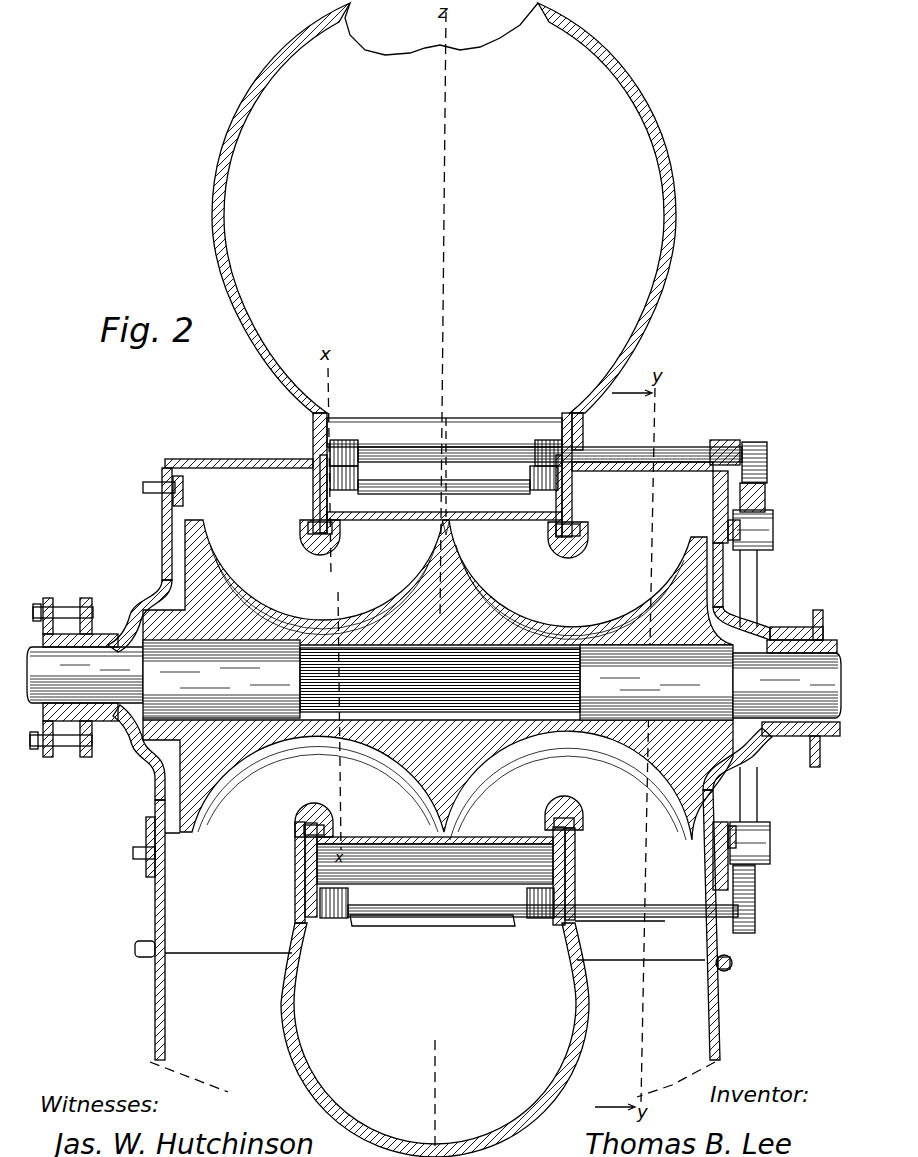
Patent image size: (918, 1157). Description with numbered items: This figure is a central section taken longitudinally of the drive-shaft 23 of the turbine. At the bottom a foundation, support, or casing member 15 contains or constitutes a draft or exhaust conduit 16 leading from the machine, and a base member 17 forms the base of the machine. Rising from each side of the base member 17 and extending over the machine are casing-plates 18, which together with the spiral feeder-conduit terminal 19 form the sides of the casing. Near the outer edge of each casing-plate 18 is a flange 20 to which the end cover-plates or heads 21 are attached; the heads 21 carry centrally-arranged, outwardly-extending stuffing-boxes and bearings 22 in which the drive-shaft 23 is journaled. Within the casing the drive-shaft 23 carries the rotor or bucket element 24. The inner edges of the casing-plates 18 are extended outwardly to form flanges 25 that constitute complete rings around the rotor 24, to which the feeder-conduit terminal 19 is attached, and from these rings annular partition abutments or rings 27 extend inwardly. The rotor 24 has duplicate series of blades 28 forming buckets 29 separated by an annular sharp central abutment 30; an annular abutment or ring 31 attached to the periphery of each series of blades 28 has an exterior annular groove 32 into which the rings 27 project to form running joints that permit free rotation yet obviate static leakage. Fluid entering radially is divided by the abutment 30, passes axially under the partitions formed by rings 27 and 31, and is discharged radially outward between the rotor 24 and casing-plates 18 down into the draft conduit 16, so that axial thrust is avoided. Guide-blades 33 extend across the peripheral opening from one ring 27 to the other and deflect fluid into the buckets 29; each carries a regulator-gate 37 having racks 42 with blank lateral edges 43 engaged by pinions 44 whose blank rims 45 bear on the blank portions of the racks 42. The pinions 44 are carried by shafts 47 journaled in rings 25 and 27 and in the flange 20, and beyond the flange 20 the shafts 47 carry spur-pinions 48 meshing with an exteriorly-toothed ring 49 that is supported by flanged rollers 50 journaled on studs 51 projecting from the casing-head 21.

The foundation, support, or casing member 15 is at (154, 990).
The draft or exhaust conduit 16 is at (429, 996).
The base member 17 is at (165, 918).
The casing-plates 18 is at (262, 459).
The feeder-conduit terminal 19 is at (444, 580).
The flange 20 is at (150, 482).
The end cover-plates or heads 21 is at (162, 556).
The stuffing-boxes and bearings 22 is at (118, 633).
The drive-shaft 23 is at (434, 680).
The rotor or bucket element 24 is at (440, 702).
The flanges 25 is at (313, 437).
The annular partition abutments or rings 27 is at (313, 499).
The blades 28 is at (398, 514).
The buckets 29 is at (438, 680).
The annular sharp central abutment 30 is at (440, 525).
The annular abutment or ring 31 is at (318, 554).
The exterior annular groove 32 is at (300, 533).
The guide-blades 33 is at (440, 926).
The regulator-gate 37 is at (420, 430).
The rack 42 is at (370, 487).
The blank longitudinal portions or lateral edges 43 is at (360, 481).
The pinion 44 is at (345, 440).
The blank rims 45 is at (360, 450).
The shafts 47 is at (446, 452).
The spur-pinions 48 is at (767, 460).
The exteriorly-toothed ring 49 is at (758, 796).
The flanged rollers 50 is at (773, 540).
The studs 51 is at (713, 526).